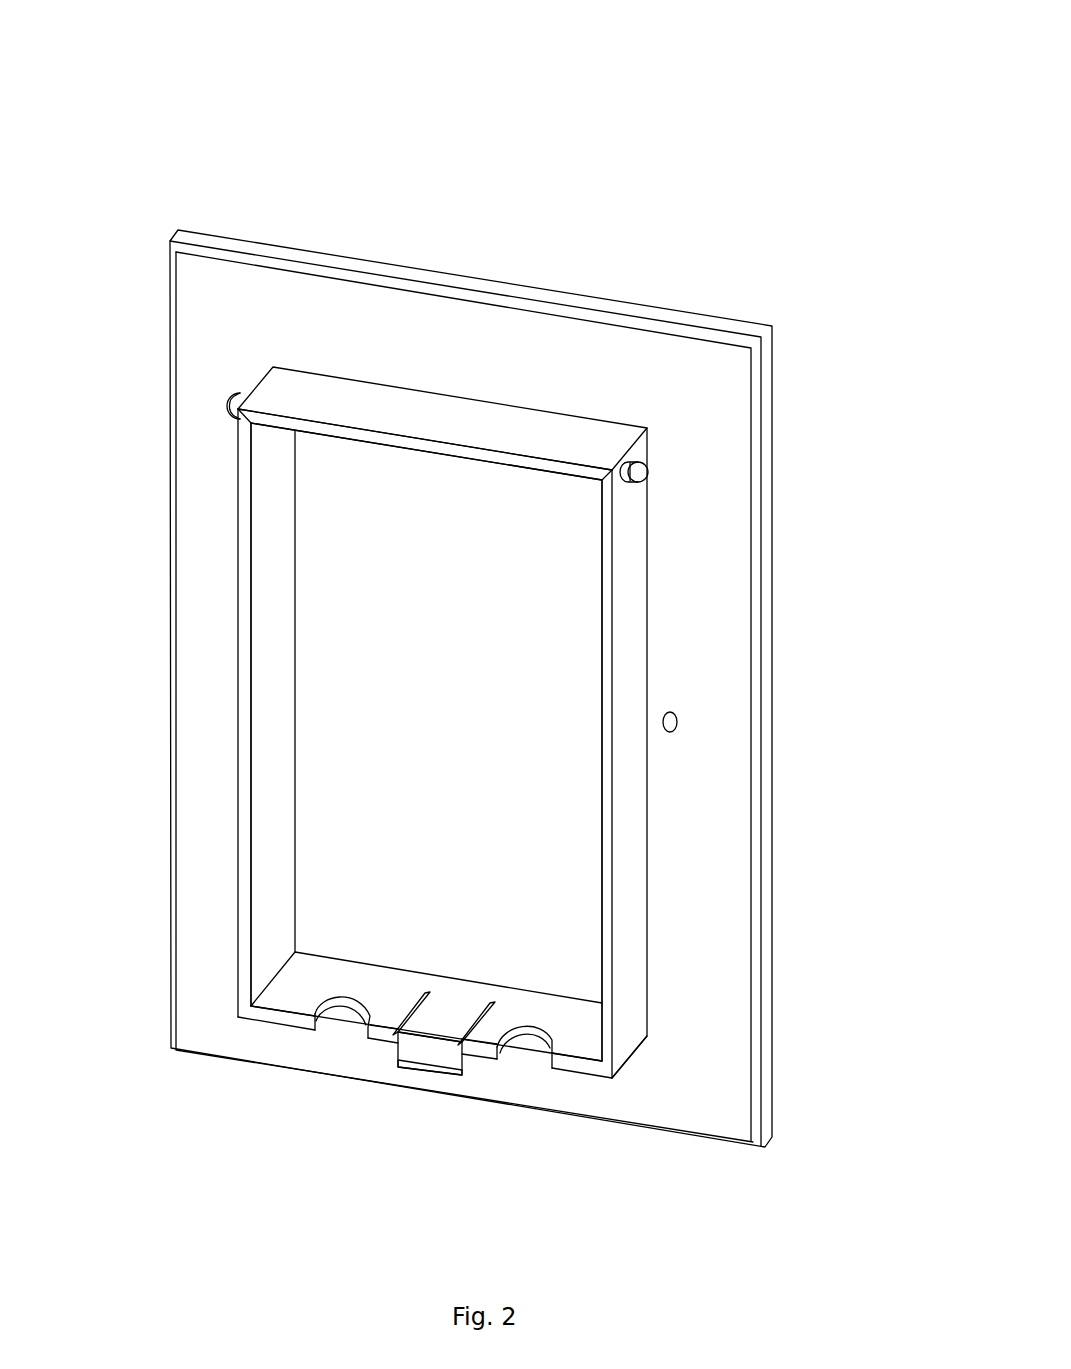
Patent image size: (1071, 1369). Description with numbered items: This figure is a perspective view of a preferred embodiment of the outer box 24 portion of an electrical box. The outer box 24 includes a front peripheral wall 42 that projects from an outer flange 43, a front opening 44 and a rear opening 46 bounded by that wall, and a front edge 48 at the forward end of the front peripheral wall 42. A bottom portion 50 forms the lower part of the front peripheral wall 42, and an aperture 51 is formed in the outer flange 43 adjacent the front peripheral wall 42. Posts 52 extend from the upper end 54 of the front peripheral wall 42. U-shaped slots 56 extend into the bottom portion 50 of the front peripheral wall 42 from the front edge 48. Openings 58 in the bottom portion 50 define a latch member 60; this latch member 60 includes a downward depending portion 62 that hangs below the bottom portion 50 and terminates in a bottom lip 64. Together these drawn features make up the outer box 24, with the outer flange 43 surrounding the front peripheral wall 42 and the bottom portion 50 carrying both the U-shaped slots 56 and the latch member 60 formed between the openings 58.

The outer box 24 is at (553, 152).
The front peripheral wall 42 is at (428, 417).
The outer flange 43 is at (715, 575).
The front opening 44 is at (255, 722).
The rear opening 46 is at (307, 695).
The front edge 48 is at (548, 465).
The bottom portion 50 is at (314, 1000).
The aperture 51 is at (680, 729).
The posts 52 is at (646, 463).
The upper end 54 is at (628, 452).
The U-shaped slots 56 is at (348, 1022).
The openings 58 is at (408, 1010).
The latch member 60 is at (438, 1017).
The downward depending portion 62 is at (394, 1048).
The bottom lip 64 is at (430, 1070).